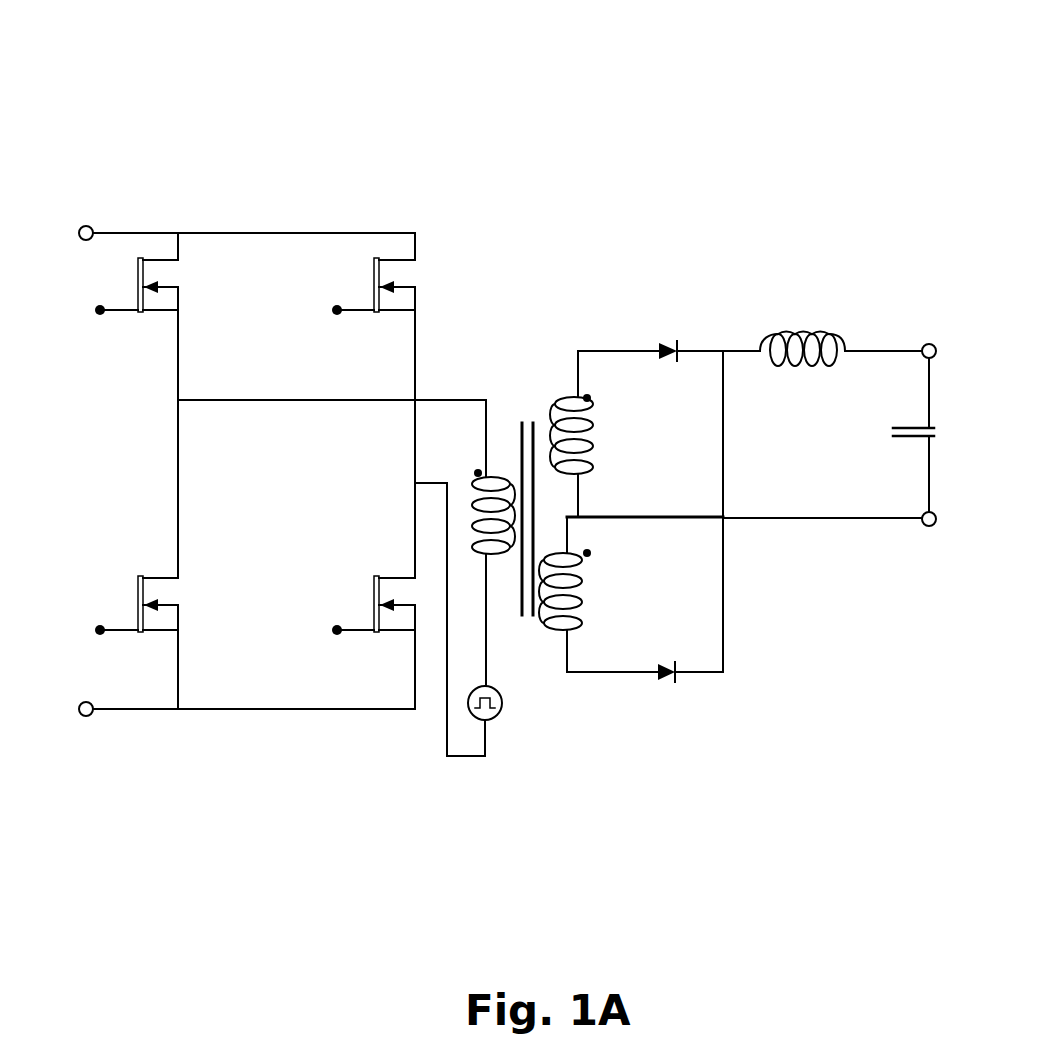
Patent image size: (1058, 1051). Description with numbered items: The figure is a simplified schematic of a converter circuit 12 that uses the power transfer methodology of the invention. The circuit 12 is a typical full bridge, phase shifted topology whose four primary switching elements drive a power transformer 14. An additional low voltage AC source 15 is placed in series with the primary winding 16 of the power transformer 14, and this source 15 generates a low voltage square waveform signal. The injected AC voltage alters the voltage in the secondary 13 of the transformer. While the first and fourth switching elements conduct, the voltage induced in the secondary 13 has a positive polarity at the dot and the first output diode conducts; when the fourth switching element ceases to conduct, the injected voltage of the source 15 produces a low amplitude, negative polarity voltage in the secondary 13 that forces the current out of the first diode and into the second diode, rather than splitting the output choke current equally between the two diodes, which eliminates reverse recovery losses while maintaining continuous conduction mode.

The circuit 12 is at (586, 114).
The secondary 13 is at (582, 595).
The power transformer 14 is at (542, 340).
The low voltage AC source 15 is at (511, 696).
The primary winding 16 is at (458, 509).